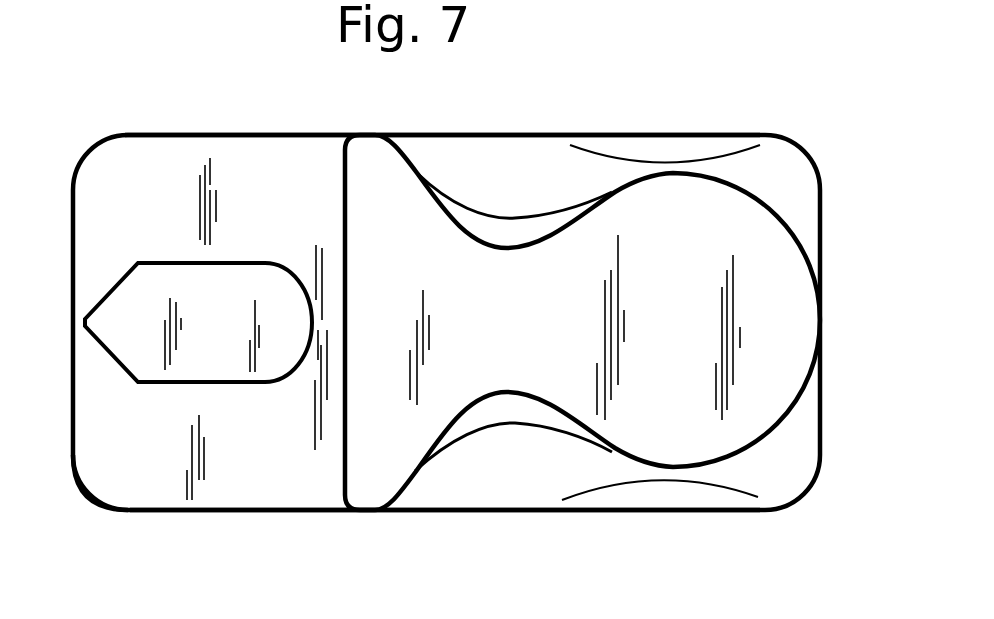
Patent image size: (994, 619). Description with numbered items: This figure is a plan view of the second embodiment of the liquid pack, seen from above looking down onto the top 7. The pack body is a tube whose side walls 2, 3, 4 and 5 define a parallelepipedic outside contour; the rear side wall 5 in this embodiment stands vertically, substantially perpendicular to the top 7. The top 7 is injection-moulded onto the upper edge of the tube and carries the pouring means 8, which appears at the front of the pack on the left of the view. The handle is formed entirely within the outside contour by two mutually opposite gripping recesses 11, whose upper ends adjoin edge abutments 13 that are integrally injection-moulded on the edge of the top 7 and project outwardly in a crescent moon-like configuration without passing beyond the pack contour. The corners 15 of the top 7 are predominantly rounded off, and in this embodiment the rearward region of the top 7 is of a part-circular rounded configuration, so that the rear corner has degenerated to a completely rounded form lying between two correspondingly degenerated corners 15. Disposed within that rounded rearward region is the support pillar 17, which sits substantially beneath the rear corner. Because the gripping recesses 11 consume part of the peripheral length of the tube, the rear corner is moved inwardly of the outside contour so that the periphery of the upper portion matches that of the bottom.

The side wall 2 is at (75, 236).
The side wall 3 is at (255, 135).
The side wall 4 is at (283, 510).
The rear side wall 5 is at (822, 313).
The top 7 is at (387, 180).
The pouring means 8 is at (127, 353).
The gripping recesses 11 is at (505, 215).
The edge abutments 13 is at (467, 425).
The corners 15 is at (90, 495).
The support pillar 17 is at (617, 442).